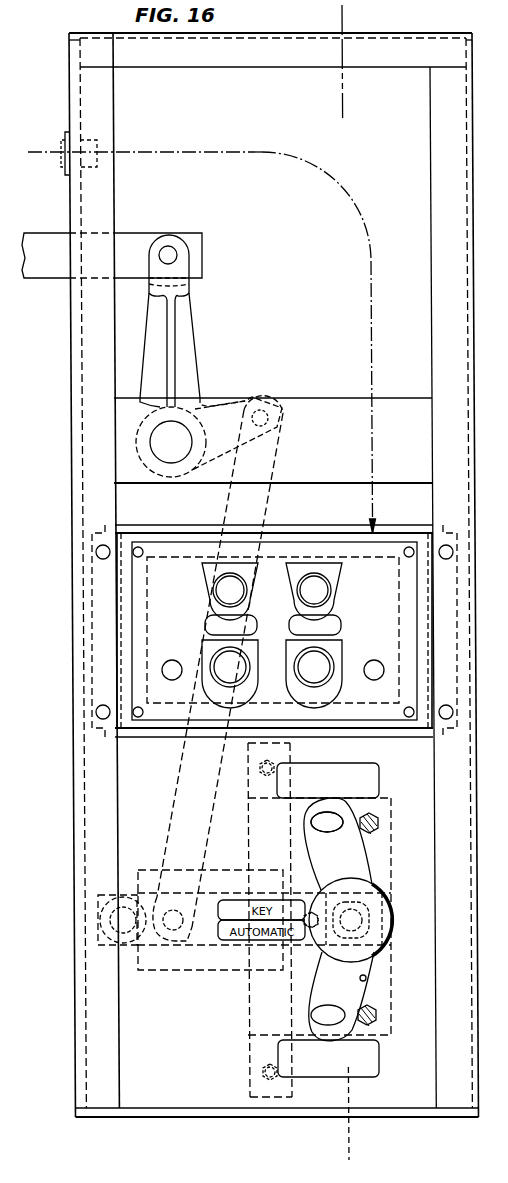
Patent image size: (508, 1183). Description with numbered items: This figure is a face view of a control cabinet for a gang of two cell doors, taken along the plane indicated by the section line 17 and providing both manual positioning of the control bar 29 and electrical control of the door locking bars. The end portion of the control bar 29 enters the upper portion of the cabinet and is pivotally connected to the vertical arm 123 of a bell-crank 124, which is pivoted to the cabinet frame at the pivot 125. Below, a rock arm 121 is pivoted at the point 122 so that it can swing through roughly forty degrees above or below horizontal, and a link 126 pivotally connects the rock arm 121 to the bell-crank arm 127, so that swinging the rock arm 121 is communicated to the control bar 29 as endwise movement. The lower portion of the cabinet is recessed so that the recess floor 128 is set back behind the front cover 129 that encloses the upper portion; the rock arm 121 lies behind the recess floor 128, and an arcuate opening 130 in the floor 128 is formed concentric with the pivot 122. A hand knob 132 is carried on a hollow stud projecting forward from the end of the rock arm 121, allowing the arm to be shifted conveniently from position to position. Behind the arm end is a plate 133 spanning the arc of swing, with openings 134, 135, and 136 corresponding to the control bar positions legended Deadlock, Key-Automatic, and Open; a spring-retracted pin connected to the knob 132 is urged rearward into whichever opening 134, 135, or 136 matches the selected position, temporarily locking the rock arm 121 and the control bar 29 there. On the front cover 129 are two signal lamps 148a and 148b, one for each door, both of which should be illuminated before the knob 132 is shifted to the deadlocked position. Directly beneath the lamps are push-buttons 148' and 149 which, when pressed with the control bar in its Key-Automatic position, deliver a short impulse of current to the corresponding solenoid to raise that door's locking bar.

The section line 17- 17 is at (316, 17).
The control bar 29 is at (128, 243).
The rock arm 121 is at (193, 947).
The pivot point 122 is at (113, 928).
The vertical arm 123 is at (183, 340).
The bell-crank 124 is at (200, 388).
The bell-crank pivot 125 is at (168, 462).
The link 126 is at (177, 772).
The bell-crank arm 127 is at (213, 458).
The recess floor 128 is at (409, 845).
The front cover 129 is at (407, 723).
The arcuate opening 130 is at (366, 978).
The hand knob 132 is at (381, 955).
The plate 133 is at (391, 877).
The opening 134 is at (326, 830).
The opening 135 is at (329, 950).
The opening 136 is at (338, 939).
The signal lamp 148a is at (322, 595).
The signal lamp 148b is at (222, 592).
The push-button 148' is at (333, 671).
The push-button 149 is at (240, 677).